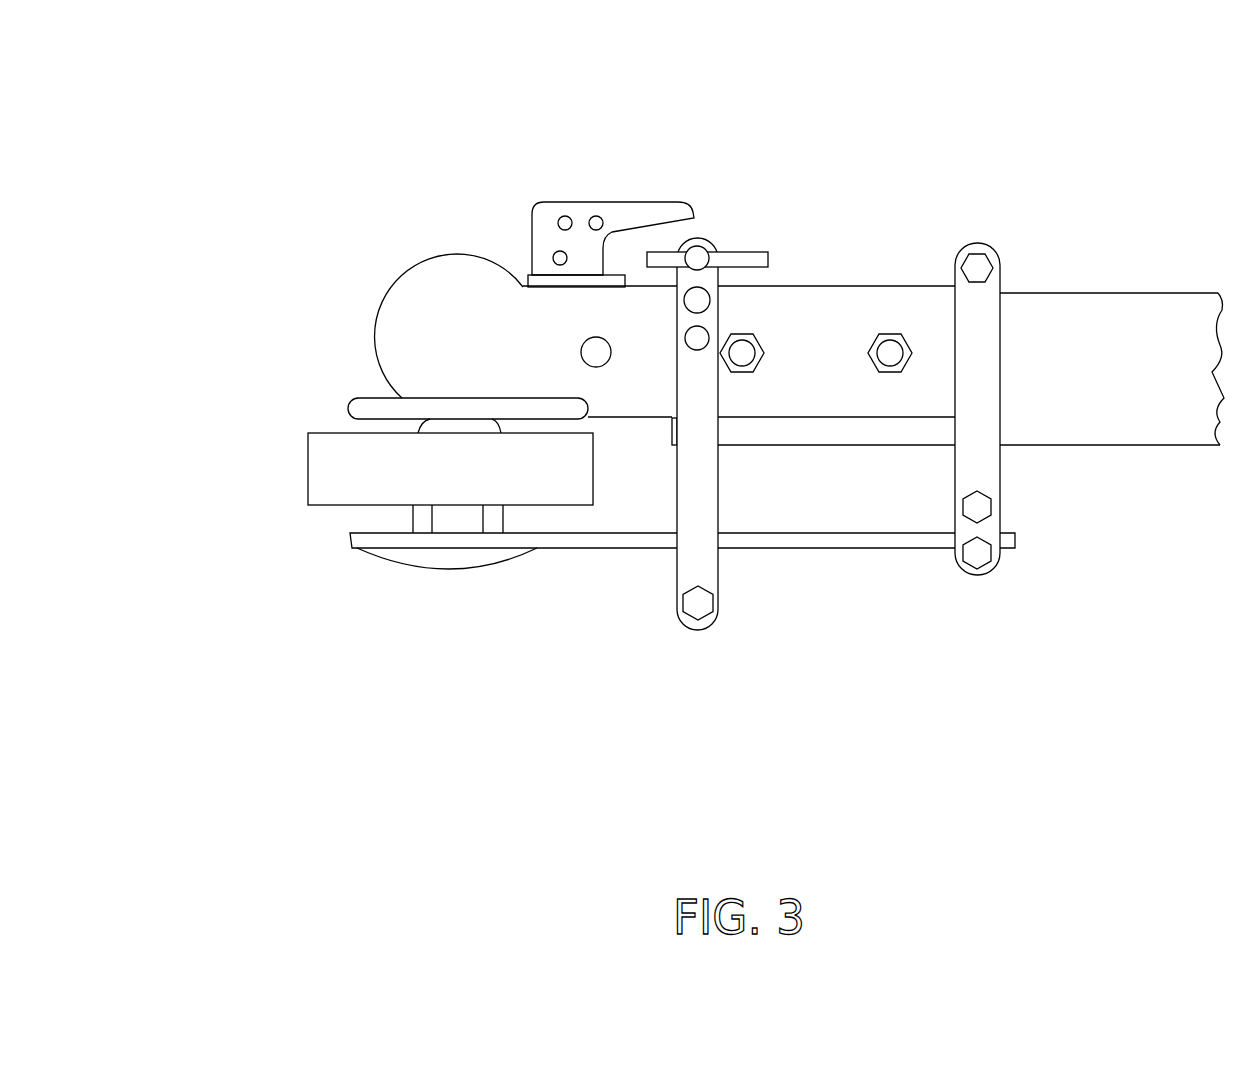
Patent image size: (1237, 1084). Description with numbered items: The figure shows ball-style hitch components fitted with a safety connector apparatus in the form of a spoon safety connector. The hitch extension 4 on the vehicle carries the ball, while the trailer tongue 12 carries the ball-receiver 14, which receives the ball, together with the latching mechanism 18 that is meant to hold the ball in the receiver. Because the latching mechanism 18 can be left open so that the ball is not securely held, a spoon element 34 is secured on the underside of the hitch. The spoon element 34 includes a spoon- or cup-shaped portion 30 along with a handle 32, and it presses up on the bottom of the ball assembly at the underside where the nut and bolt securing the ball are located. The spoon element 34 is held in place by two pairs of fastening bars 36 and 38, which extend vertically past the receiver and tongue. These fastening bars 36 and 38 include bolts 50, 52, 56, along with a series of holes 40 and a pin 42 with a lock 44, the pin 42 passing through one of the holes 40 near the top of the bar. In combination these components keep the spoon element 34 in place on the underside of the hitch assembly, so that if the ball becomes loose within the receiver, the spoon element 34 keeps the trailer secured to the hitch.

The hitch extension 4 is at (342, 468).
The tongue 12 is at (1093, 403).
The ball-receiver 14 is at (425, 310).
The latching mechanism 18 is at (587, 213).
The spoon- or cup-shaped portion 30 is at (448, 562).
The handle 32 is at (753, 548).
The spoon element 34 is at (572, 603).
The fastening bar 36 is at (980, 383).
The fastening bar 38 is at (705, 392).
The holes 40 is at (697, 338).
The pin 42 is at (700, 255).
The lock 44 is at (753, 260).
The bolt 50 is at (700, 603).
The bolt 52 is at (983, 557).
The bolt 56 is at (975, 272).